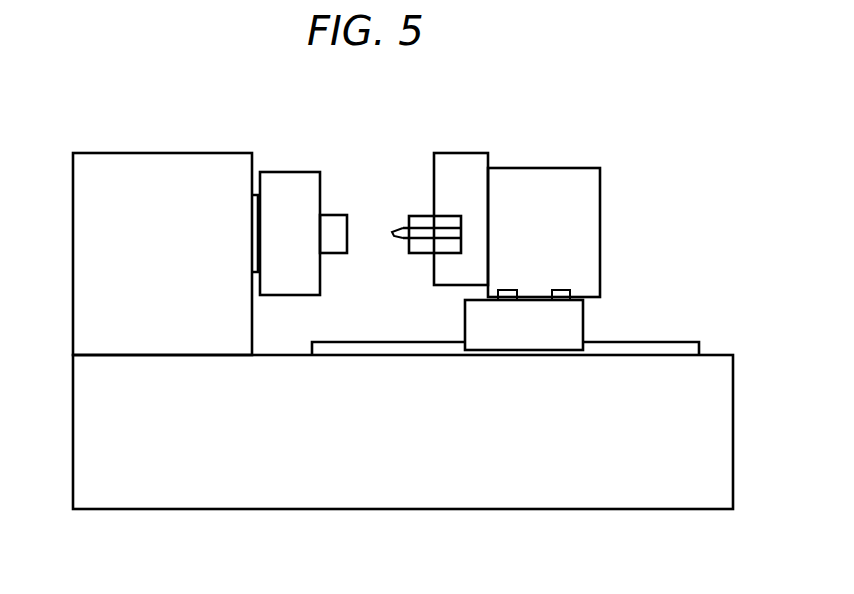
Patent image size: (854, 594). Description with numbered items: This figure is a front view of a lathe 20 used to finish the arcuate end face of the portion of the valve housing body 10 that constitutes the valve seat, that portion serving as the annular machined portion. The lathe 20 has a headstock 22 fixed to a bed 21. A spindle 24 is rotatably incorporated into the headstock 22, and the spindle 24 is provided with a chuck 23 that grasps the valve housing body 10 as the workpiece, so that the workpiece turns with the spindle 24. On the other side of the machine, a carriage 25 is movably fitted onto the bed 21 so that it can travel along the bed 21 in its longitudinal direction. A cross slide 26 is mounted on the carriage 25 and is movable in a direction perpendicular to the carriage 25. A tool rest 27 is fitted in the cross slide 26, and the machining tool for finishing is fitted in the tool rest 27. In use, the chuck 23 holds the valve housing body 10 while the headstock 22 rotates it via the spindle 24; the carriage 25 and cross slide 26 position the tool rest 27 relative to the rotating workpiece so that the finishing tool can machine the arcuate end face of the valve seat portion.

The valve housing body 10 is at (340, 220).
The lathe 20 is at (690, 250).
The bed 21 is at (686, 497).
The headstock 22 is at (90, 308).
The chuck 23 is at (290, 187).
The spindle 24 is at (253, 213).
The carriage 25 is at (570, 320).
The cross slide 26 is at (580, 263).
The tool rest 27 is at (418, 245).